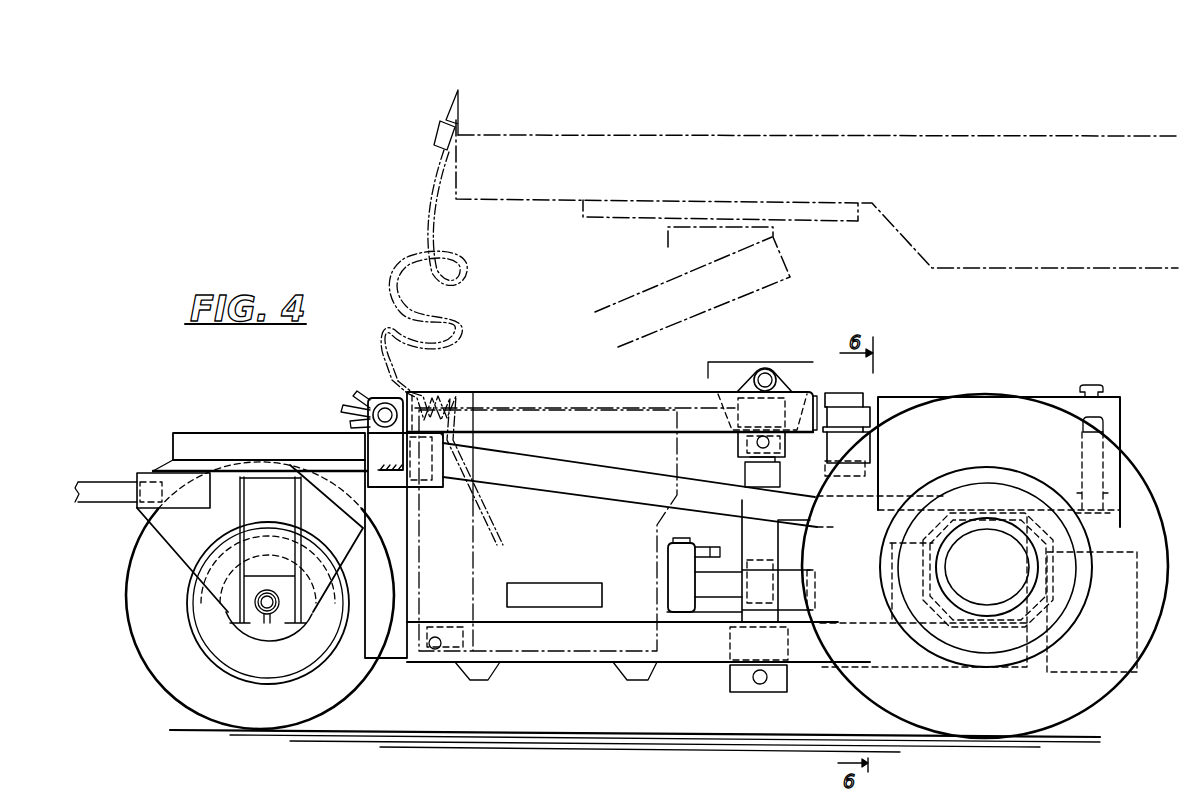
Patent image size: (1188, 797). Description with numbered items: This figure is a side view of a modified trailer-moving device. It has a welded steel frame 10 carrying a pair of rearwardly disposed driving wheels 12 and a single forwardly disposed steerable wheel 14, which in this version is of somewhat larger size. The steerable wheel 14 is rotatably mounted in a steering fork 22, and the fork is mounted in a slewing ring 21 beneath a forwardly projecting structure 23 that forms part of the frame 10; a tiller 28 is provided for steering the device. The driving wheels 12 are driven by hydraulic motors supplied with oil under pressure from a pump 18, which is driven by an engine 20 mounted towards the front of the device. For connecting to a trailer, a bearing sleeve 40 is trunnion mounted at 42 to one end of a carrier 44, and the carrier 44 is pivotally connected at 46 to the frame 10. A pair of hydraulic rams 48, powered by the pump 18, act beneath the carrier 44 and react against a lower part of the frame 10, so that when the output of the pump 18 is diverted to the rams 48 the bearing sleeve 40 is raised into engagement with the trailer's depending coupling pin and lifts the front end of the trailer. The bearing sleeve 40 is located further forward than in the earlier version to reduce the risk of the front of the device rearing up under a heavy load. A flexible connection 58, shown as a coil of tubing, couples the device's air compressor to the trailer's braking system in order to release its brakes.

The welded steel frame 10 is at (673, 657).
The driving wheels 12 is at (1093, 683).
The steerable wheel 14 is at (365, 692).
The pump 18 is at (712, 616).
The engine 20 is at (573, 537).
The slewing ring 21 is at (203, 457).
The steering fork 22 is at (208, 578).
The forwardly projecting structure 23 is at (277, 441).
The tiller 28 is at (109, 476).
The bearing sleeve 40 is at (818, 372).
The trunnion mounting 42 is at (766, 375).
The carrier 44 is at (633, 393).
The pivotal connection 46 is at (384, 400).
The hydraulic ram 48 is at (750, 533).
The flexible connection 58 is at (455, 404).